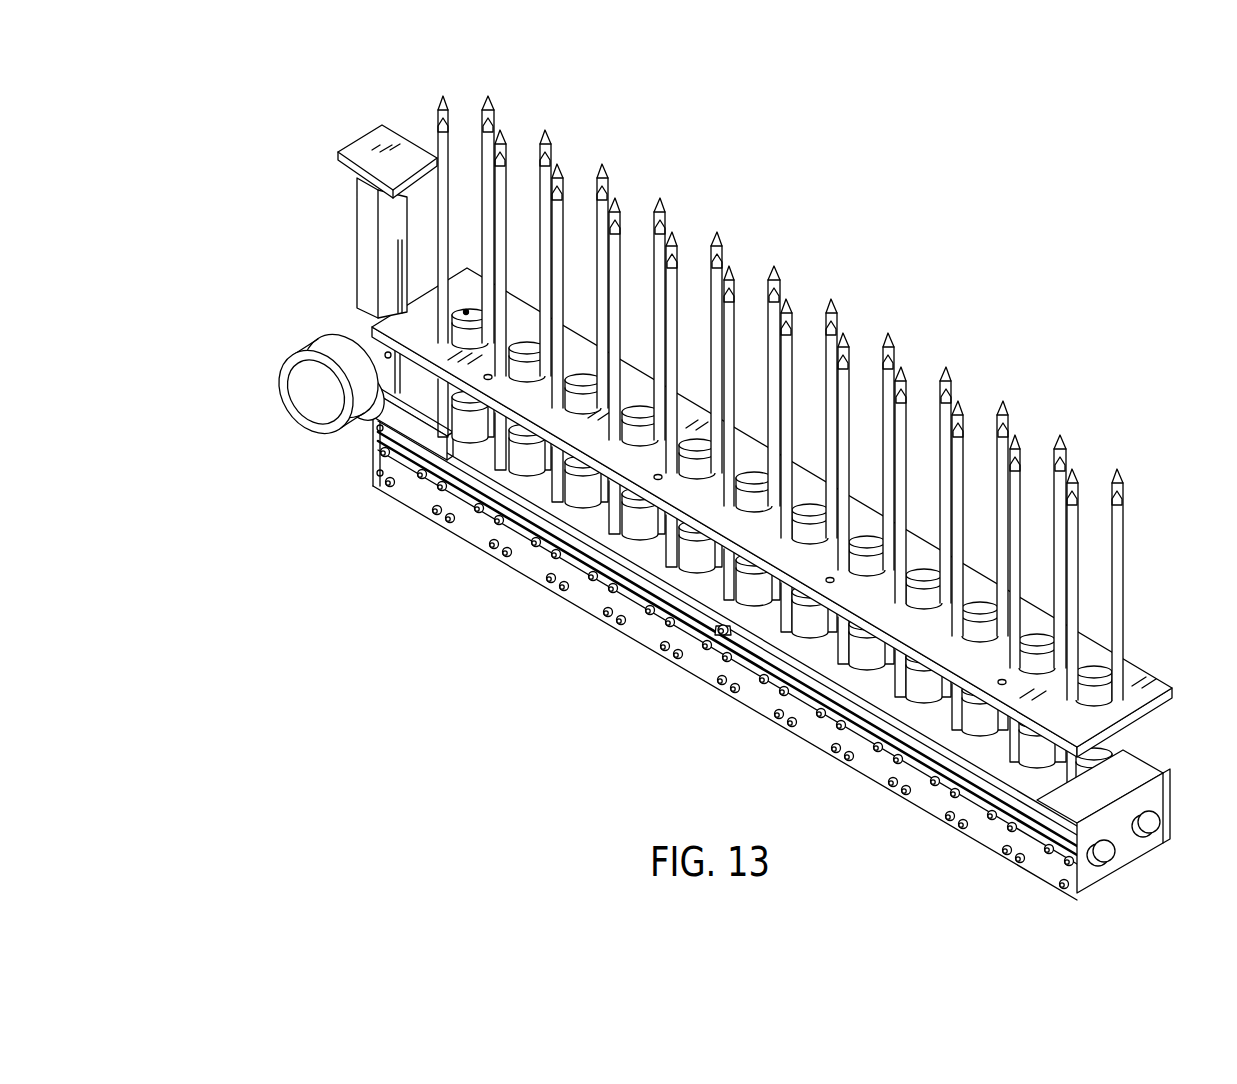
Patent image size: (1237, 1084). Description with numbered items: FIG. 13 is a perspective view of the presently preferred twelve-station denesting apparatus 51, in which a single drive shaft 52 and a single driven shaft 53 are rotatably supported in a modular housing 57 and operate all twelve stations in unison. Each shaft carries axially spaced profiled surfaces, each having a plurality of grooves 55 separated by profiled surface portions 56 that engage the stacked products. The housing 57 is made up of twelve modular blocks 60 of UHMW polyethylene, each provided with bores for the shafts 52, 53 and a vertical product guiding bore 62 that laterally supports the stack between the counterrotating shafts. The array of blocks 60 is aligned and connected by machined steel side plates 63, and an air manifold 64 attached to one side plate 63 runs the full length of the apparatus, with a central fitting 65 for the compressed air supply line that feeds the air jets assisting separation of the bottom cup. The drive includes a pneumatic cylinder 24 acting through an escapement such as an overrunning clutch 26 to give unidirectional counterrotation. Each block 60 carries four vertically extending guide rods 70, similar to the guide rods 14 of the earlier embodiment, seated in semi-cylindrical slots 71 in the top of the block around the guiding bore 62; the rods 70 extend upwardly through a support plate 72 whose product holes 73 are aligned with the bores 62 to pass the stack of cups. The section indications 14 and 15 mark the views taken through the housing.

The guide rods 14 is at (270, 525).
The section line 15 is at (330, 493).
The pneumatic cylinder 24 is at (360, 236).
The overrunning clutch 26 is at (290, 400).
The twelve-station apparatus 51 is at (1140, 652).
The drive shaft 52 is at (1107, 850).
The driven shaft 53 is at (1152, 825).
The grooves 55 is at (850, 745).
The profiled surface portions 56 is at (793, 713).
The modular housing 57 is at (742, 702).
The modular blocks 60 is at (1160, 773).
The product guiding bore 62 is at (580, 510).
The side plates 63 is at (1143, 763).
The air manifold 64 is at (403, 462).
The central fitting 65 is at (716, 638).
The guide rods 70 is at (782, 398).
The semi-cylindrical slots 71 is at (613, 510).
The support plate 72 is at (798, 477).
The product holes 73 is at (932, 580).